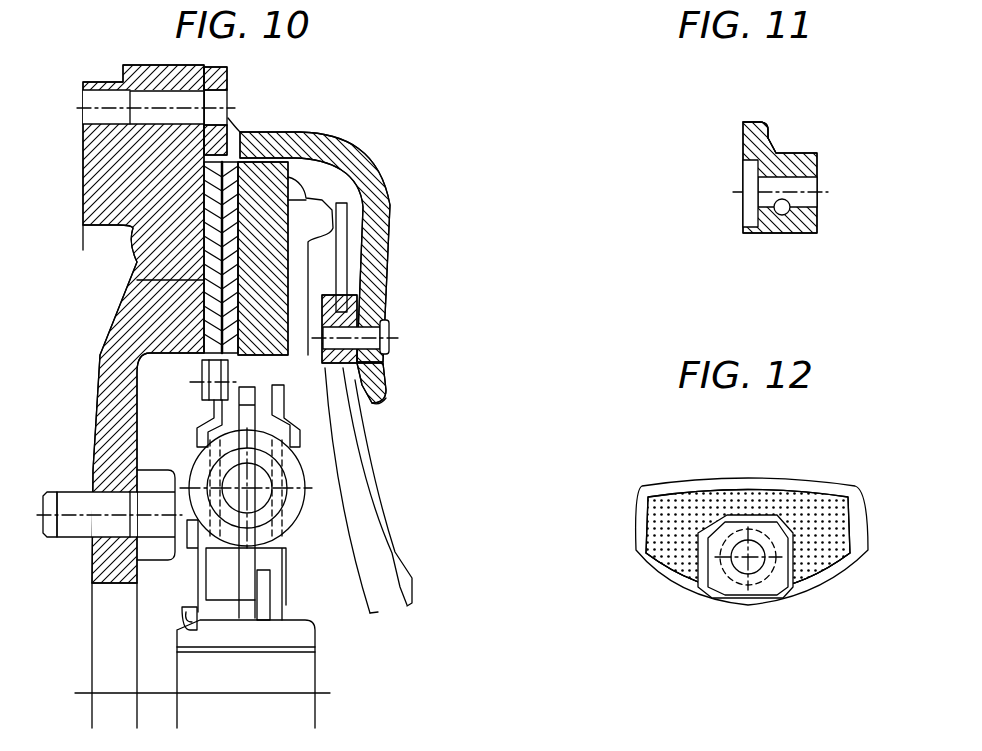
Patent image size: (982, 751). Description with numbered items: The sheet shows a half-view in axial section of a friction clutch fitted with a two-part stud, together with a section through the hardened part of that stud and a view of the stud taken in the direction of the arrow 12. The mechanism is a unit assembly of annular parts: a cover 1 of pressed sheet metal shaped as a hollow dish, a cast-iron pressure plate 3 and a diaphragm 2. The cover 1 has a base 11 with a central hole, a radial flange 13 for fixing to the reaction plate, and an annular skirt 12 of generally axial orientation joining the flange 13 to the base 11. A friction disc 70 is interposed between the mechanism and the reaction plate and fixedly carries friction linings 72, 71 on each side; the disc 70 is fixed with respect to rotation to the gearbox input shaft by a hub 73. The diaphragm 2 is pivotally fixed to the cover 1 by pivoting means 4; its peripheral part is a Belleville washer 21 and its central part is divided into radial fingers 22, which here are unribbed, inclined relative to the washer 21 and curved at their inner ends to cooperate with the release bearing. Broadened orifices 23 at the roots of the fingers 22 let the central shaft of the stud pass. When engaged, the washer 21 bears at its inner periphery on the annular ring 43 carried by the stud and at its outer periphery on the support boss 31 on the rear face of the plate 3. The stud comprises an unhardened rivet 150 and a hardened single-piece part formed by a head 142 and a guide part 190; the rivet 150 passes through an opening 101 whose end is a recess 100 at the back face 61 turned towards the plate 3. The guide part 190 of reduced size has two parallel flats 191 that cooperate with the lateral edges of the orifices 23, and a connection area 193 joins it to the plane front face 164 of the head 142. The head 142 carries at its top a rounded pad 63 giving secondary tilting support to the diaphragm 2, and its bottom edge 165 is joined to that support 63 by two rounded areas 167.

In FIG. 10, the cover 1 is at (394, 209).
In FIG. 10, the diaphragm 2 is at (385, 467).
In FIG. 10, the pressure plate 3 is at (270, 160).
In FIG. 10, the pivoting means 4 is at (394, 322).
In FIG. 10, the base 11 is at (383, 395).
In FIG. 10, the annular skirt 12 is at (580, 298).
In FIG. 10, the radial flange 13 is at (230, 72).
In FIG. 10, the Belleville washer 21 is at (349, 255).
In FIG. 10, the radial fingers 22 is at (383, 510).
In FIG. 10, the broadened orifices 23 is at (387, 402).
In FIG. 10, the support boss 31 is at (312, 203).
In FIG. 10, the annular ring 43 is at (356, 292).
In FIG. 11, the back face 61 is at (745, 152).
In FIG. 11, the rounded part 63 is at (766, 128).
In FIG. 12, the rounded part 63 is at (672, 490).
In FIG. 10, the friction disc 70 is at (199, 363).
In FIG. 10, the friction lining 71 is at (138, 280).
In FIG. 10, the friction lining 72 is at (232, 158).
In FIG. 10, the hub 73 is at (304, 636).
In FIG. 11, the recess 100 is at (748, 224).
In FIG. 11, the opening 101 is at (782, 212).
In FIG. 10, the head 142 is at (298, 503).
In FIG. 11, the head 142 is at (752, 140).
In FIG. 10, the rivet 150 is at (370, 342).
In FIG. 12, the front face 164 is at (832, 562).
In FIG. 12, the bottom edge 165 is at (749, 606).
In FIG. 12, the rounded areas 167 is at (866, 510).
In FIG. 10, the guide part 190 is at (317, 516).
In FIG. 11, the guide part 190 is at (803, 152).
In FIG. 12, the flats 191 is at (703, 562).
In FIG. 12, the connection area 193 is at (792, 532).